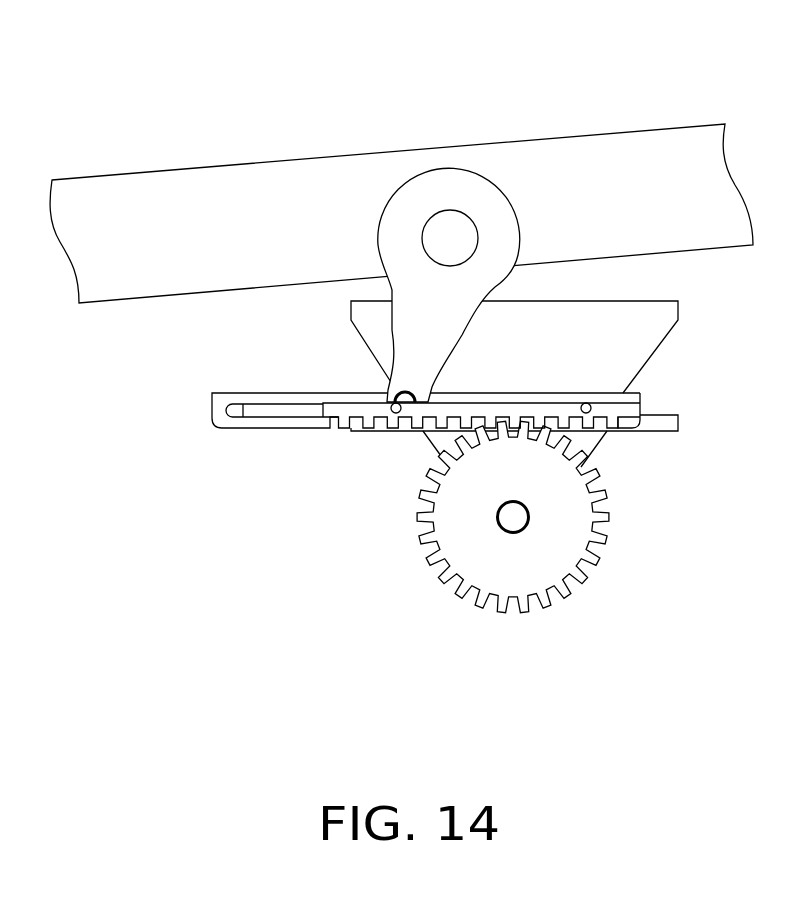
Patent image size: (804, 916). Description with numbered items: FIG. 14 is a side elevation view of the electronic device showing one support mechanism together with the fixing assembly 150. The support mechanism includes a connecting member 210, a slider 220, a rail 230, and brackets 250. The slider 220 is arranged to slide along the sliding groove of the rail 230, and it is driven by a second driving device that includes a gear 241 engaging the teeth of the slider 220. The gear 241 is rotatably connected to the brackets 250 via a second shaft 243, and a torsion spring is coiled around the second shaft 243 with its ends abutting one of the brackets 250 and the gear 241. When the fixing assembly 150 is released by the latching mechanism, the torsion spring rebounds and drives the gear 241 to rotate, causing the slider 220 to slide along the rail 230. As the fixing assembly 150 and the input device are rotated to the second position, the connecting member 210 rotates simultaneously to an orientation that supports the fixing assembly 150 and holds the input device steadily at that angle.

The fixing assembly 150 is at (612, 155).
The connecting member 210 is at (400, 203).
The slider 220 is at (627, 413).
The rail 230 is at (247, 425).
The gear 241 is at (567, 552).
The second shaft 243 is at (518, 515).
The bracket 250 is at (647, 323).